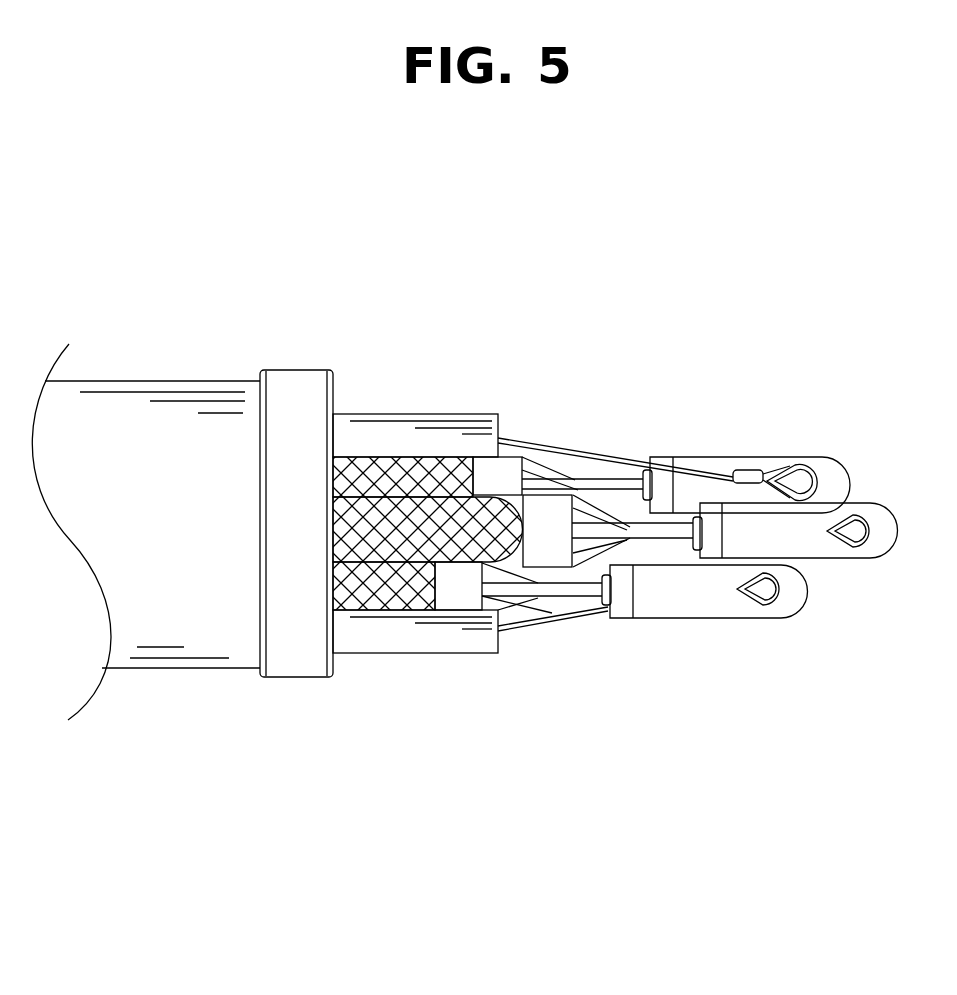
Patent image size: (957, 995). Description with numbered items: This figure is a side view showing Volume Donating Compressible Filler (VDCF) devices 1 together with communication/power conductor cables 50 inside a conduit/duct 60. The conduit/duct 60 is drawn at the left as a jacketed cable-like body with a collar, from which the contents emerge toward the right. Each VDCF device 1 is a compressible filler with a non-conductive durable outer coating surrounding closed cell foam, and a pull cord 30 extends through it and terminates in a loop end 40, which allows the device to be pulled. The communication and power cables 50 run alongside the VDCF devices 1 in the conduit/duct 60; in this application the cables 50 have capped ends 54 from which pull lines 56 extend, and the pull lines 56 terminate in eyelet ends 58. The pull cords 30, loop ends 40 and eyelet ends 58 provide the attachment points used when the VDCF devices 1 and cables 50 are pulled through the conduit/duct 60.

The Volume Donating Compressible Filler (VDCF) device 1 is at (417, 392).
The pull cord 30 is at (621, 458).
The loop end 40 is at (817, 467).
The communication/power conductor cables 50 is at (482, 547).
The capped ends 54 is at (511, 453).
The pull lines 56 is at (555, 485).
The eyelet ends 58 is at (736, 463).
The conduit/duct 60 is at (237, 355).